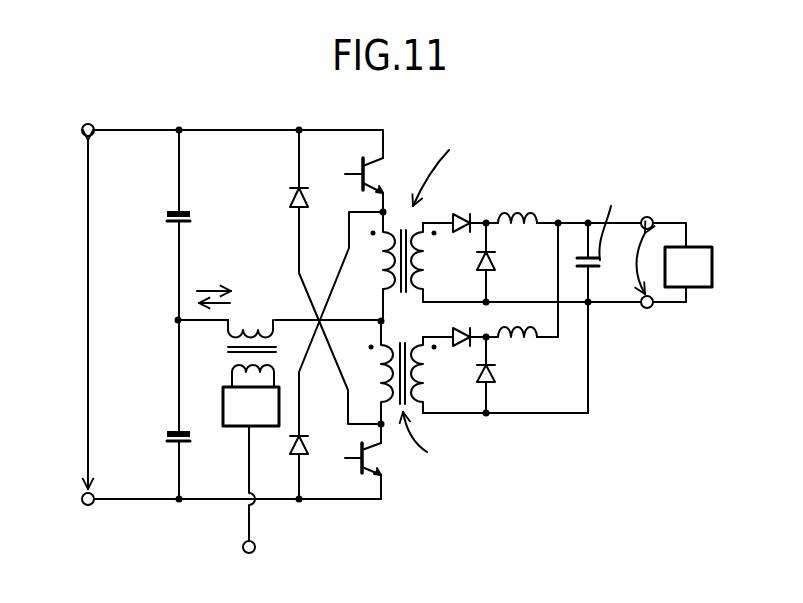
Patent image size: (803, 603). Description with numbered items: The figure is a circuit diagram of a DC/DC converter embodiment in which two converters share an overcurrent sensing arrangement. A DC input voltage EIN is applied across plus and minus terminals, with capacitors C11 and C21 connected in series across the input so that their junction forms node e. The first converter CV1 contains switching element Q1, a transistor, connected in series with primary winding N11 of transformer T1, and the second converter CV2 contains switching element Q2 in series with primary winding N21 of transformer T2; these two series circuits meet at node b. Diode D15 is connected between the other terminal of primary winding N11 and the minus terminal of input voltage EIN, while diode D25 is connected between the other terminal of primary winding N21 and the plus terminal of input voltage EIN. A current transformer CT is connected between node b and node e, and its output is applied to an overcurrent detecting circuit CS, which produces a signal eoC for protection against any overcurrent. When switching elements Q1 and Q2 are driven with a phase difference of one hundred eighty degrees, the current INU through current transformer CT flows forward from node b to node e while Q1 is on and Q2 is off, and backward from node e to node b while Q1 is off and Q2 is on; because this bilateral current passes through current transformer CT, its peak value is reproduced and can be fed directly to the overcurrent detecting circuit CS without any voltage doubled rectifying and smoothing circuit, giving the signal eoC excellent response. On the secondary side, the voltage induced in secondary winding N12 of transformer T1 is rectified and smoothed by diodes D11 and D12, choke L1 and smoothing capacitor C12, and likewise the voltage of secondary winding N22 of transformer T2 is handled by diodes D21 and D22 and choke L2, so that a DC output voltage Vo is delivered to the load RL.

The capacitor C11 is at (163, 220).
The capacitor C21 is at (163, 441).
The diode D25 is at (318, 277).
The diode D15 is at (319, 355).
The current transformer CT is at (238, 353).
The overcurrent detecting circuit CS is at (251, 406).
The switching element Q1 is at (374, 185).
The switching element Q2 is at (374, 461).
The transformer T1 is at (409, 263).
The transformer T2 is at (407, 372).
The primary winding N11 is at (370, 266).
The secondary winding N12 is at (442, 262).
The primary winding N21 is at (366, 372).
The secondary winding N22 is at (442, 375).
The diode D11 is at (465, 210).
The diode D12 is at (506, 262).
The diode D21 is at (461, 325).
The diode D22 is at (505, 375).
The choke L1 is at (517, 207).
The choke L2 is at (517, 321).
The smoothing capacitor C12 is at (605, 296).
The load RL is at (682, 262).
The first converter CV1 is at (448, 166).
The second converter CV2 is at (439, 445).
The DC input voltage EIN is at (85, 314).
The DC voltage Vo is at (632, 263).
The current INU is at (233, 300).
The signal eoC is at (269, 492).
The node e is at (163, 318).
The node b is at (368, 309).